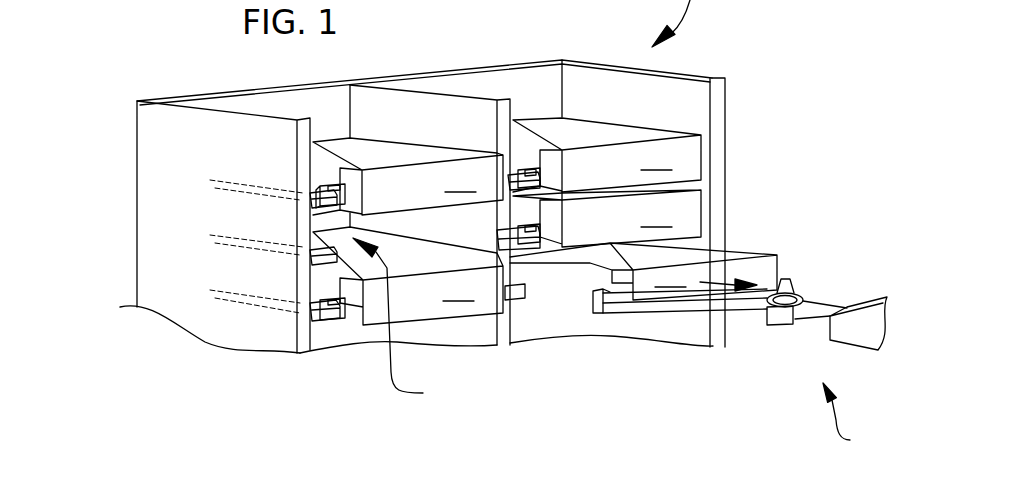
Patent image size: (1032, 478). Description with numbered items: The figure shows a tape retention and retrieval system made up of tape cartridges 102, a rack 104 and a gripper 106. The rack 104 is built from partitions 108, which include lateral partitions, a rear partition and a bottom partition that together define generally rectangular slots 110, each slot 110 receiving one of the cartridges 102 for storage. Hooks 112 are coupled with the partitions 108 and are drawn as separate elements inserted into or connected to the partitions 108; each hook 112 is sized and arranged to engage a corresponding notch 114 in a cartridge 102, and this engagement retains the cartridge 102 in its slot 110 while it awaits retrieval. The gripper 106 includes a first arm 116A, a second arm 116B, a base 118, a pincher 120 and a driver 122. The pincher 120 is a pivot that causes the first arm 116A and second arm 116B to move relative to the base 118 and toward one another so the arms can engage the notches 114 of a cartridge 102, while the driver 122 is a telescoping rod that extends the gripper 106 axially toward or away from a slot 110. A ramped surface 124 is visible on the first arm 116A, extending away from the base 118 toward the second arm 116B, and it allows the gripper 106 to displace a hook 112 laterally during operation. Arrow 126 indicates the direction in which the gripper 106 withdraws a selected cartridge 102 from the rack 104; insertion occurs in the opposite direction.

The cartridge 102 is at (545, 221).
The rack 104 is at (137, 202).
The gripper 106 is at (852, 418).
The partition 108 is at (250, 90).
The slot 110 is at (407, 320).
The hook 112 is at (333, 197).
The notch 114 is at (345, 202).
The first arm 116A is at (692, 313).
The second arm 116B is at (786, 290).
The base 118 is at (828, 303).
The pincher 120 is at (778, 323).
The driver 122 is at (847, 340).
The ramped surface 124 is at (602, 310).
The arrow 126 is at (733, 262).